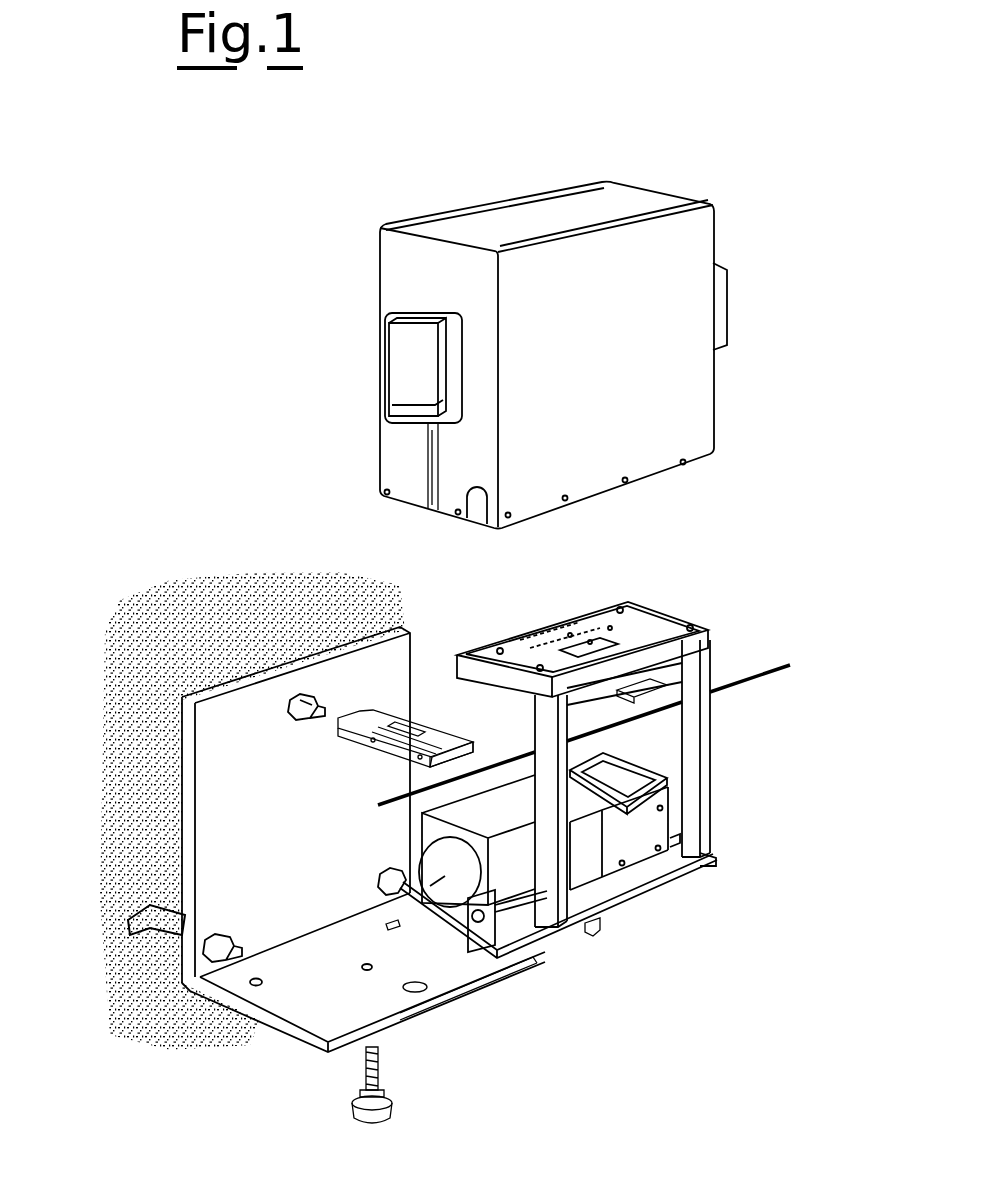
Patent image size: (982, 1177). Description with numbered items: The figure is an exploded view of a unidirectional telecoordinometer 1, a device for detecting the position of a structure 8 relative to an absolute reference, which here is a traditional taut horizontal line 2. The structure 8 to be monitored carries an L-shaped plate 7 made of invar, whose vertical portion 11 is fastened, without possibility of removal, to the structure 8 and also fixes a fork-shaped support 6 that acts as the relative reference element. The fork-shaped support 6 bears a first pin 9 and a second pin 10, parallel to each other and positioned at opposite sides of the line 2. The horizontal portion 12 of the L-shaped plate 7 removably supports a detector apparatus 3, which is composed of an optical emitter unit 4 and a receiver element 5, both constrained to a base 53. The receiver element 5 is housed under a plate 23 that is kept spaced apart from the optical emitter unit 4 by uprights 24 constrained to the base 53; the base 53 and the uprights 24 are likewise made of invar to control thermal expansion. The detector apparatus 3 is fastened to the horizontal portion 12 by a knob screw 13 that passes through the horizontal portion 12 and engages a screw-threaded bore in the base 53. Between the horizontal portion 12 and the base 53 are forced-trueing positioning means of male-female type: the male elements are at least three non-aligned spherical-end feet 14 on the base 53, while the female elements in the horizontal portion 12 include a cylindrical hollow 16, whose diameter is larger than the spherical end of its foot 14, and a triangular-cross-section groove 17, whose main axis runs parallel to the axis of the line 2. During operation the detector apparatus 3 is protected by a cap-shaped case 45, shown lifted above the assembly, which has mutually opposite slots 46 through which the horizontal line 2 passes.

The unidirectional telecoordinometer 1 is at (153, 177).
The taut horizontal line 2 is at (750, 683).
The detector apparatus 3 is at (736, 720).
The optical emitter unit 4 is at (583, 827).
The receiver element 5 is at (603, 690).
The fork-shaped support 6 is at (373, 747).
The L-shaped plate 7 is at (219, 724).
The structure 8 is at (251, 612).
The first pin 9 is at (413, 728).
The second pin 10 is at (452, 743).
The vertical portion 11 is at (207, 842).
The horizontal portion 12 is at (309, 1013).
The knob screw 13 is at (358, 1112).
The spherical-end feet 14 is at (588, 930).
The cylindrical hollow 16 is at (421, 996).
The triangular-cross-section groove 17 is at (394, 927).
The plate 23 is at (541, 655).
The uprights 24 is at (706, 804).
The cap-shaped case 45 is at (624, 200).
The slots 46 is at (428, 498).
The base 53 is at (642, 877).